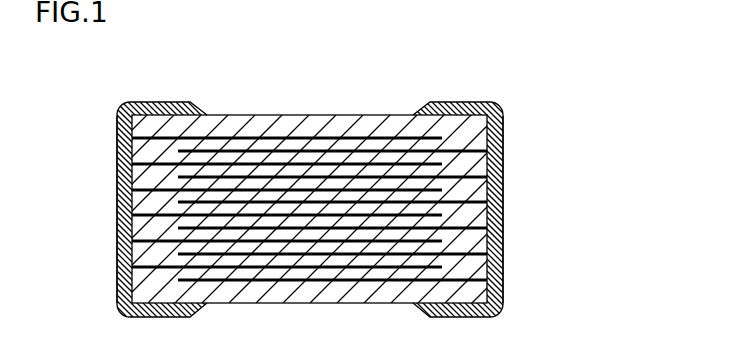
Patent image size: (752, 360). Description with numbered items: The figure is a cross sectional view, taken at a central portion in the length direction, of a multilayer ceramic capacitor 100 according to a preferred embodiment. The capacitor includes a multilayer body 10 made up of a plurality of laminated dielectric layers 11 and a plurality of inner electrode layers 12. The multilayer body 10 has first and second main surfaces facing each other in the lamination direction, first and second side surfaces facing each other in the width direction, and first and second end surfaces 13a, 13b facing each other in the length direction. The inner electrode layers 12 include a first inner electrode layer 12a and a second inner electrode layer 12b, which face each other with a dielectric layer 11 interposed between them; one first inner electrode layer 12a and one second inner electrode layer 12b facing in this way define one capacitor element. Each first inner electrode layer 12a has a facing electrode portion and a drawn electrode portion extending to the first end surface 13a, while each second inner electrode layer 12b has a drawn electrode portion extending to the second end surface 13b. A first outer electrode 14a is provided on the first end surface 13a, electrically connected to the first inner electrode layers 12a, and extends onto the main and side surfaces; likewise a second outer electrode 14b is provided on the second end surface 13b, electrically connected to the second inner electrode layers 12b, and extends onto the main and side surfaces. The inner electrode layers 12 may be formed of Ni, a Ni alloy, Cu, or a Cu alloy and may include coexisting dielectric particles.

The multilayer ceramic capacitor 100 is at (555, 58).
The multilayer body 10 is at (326, 108).
The dielectric layer 11 is at (362, 150).
The inner electrode layer 12 is at (198, 72).
The first inner electrode layer 12a is at (290, 150).
The second inner electrode layer 12b is at (255, 152).
The first end surface 13a is at (128, 218).
The second end surface 13b is at (503, 226).
The first outer electrode 14a is at (117, 184).
The second outer electrode 14b is at (495, 187).